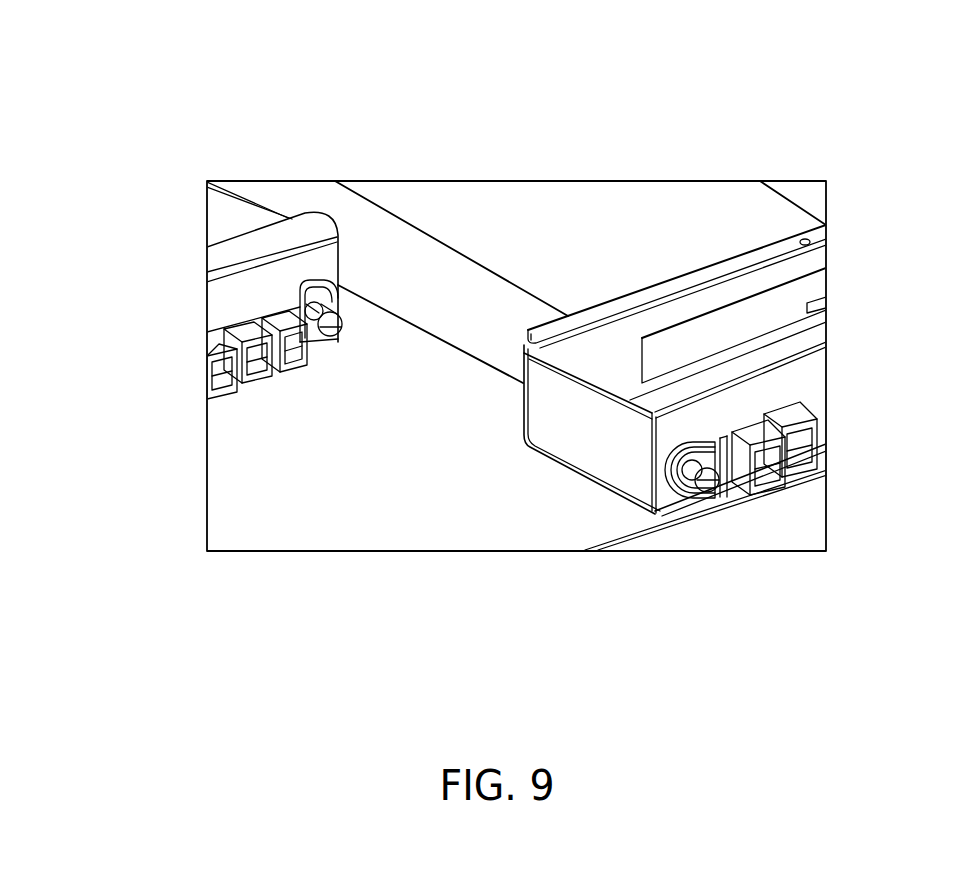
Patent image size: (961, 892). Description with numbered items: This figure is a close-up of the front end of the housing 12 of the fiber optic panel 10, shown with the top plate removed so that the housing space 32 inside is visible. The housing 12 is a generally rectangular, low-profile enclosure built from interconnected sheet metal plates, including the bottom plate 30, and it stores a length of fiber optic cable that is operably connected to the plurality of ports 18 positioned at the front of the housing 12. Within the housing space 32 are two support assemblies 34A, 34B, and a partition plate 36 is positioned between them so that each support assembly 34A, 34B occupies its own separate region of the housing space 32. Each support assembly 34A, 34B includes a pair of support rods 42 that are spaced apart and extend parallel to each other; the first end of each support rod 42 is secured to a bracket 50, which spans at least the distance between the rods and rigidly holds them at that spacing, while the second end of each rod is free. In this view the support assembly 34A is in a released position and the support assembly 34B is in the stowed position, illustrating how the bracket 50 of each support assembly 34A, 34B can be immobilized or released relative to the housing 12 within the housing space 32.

The fiber optic panel 10 is at (201, 74).
The housing 12 is at (232, 512).
The ports 18 is at (222, 393).
The bottom plate 30 is at (427, 523).
The housing space 32 is at (375, 342).
The support assembly 34A is at (173, 340).
The support assembly 34B is at (745, 186).
The partition plate 36 is at (592, 455).
The support rods 42 is at (413, 250).
The bracket 50 is at (305, 262).